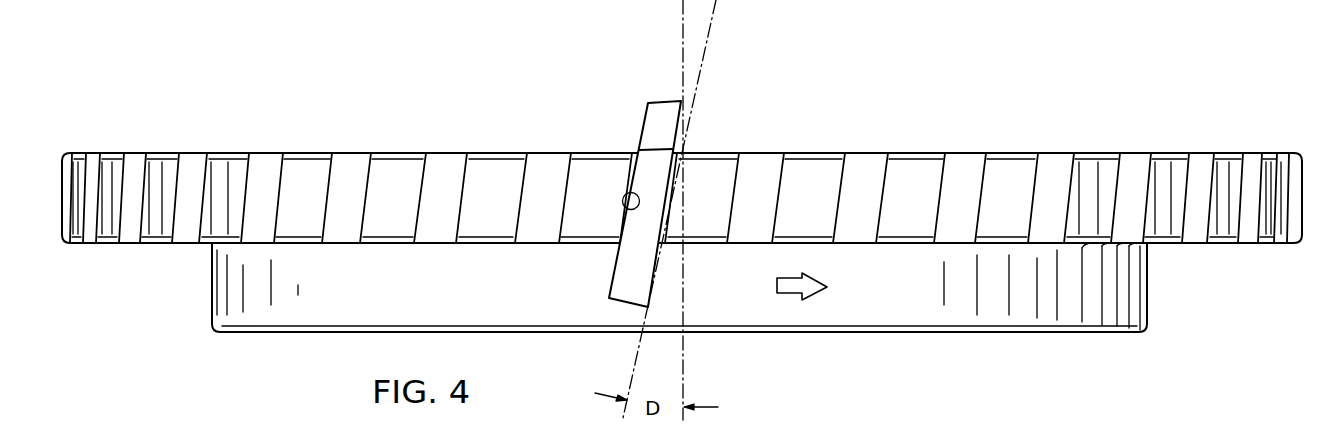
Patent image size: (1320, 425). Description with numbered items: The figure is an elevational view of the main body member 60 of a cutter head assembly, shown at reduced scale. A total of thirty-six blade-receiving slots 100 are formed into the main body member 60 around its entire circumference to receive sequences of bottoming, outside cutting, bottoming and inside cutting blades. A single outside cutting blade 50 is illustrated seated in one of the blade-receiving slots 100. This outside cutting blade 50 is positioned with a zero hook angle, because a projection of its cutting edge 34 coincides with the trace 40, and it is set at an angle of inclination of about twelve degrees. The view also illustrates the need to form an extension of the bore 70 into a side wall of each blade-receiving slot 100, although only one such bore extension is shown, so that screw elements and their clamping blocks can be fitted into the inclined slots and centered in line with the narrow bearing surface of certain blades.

The cutting edge 34 is at (688, 124).
The trace 40 is at (681, 12).
The outside cutting blade 50 is at (610, 264).
The main body member 60 is at (682, 208).
The bore 70 is at (622, 205).
The blade-receiving slots 100 is at (528, 175).